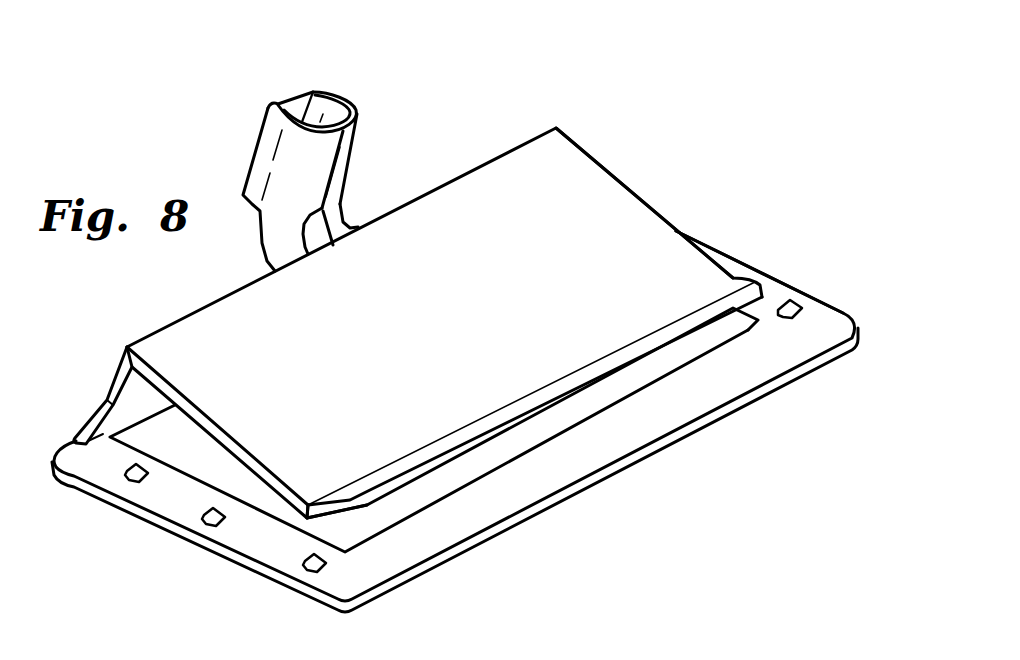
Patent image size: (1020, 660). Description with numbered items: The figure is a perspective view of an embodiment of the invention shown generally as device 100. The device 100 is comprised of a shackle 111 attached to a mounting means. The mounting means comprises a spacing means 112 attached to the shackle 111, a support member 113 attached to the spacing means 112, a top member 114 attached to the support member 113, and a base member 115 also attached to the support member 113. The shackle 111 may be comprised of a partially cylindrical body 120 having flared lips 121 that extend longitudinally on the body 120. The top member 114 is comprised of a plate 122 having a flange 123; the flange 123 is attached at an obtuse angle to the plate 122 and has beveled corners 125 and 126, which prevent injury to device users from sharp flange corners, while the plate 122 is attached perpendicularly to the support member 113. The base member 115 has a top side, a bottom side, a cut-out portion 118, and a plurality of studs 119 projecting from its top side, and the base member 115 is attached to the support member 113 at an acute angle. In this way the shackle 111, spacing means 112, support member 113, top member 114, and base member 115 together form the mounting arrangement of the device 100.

The device 100 is at (735, 187).
The shackle 111 is at (344, 145).
The spacing means 112 is at (341, 221).
The support member 113 is at (113, 383).
The top member 114 is at (444, 323).
The base member 115 is at (545, 508).
The cut-out portion 118 is at (603, 404).
The studs 119 is at (305, 568).
The partially cylindrical body 120 is at (345, 163).
The flared lips 121 is at (313, 90).
The plate 122 is at (617, 213).
The flange 123 is at (617, 348).
The beveled corner 125 is at (768, 276).
The beveled corner 126 is at (363, 511).